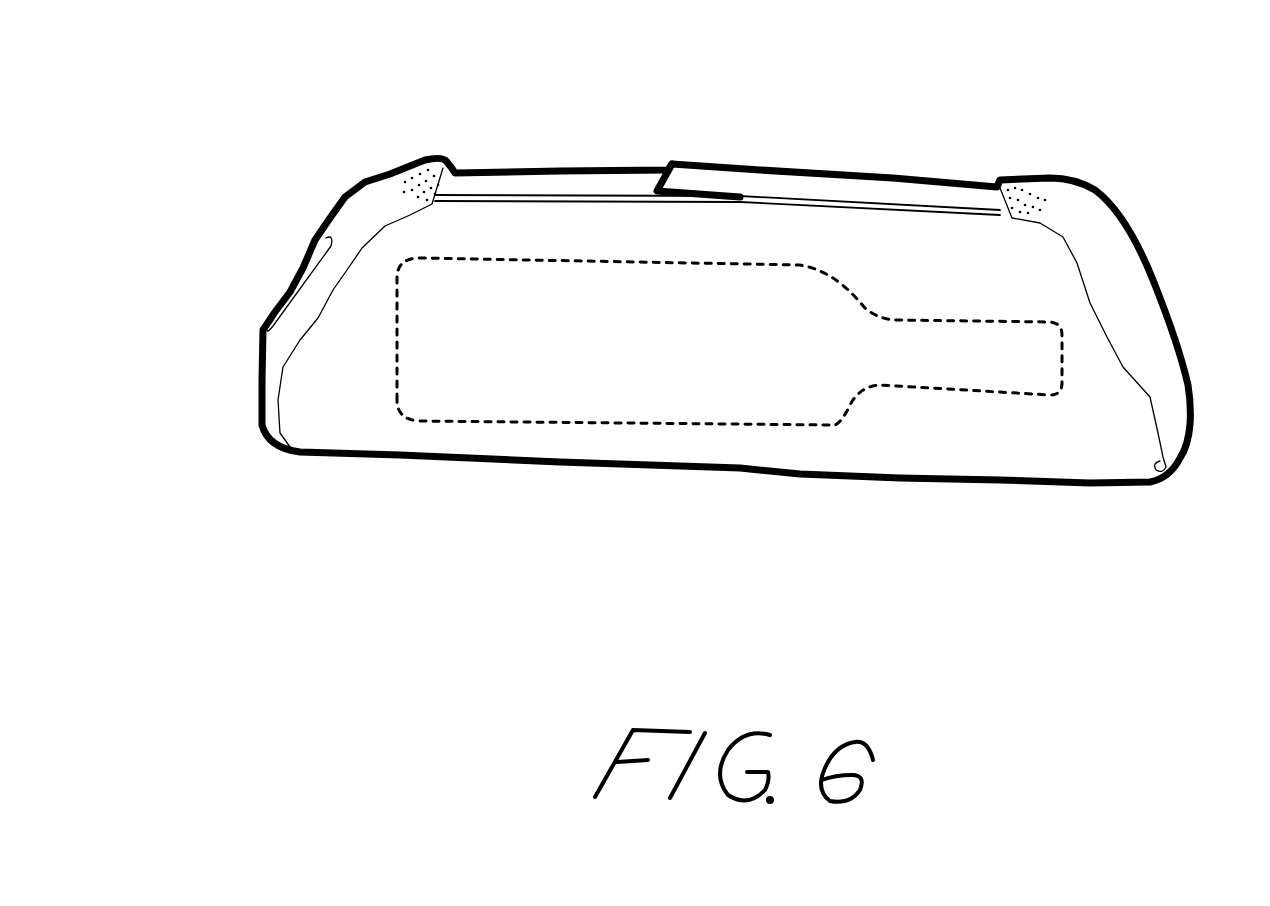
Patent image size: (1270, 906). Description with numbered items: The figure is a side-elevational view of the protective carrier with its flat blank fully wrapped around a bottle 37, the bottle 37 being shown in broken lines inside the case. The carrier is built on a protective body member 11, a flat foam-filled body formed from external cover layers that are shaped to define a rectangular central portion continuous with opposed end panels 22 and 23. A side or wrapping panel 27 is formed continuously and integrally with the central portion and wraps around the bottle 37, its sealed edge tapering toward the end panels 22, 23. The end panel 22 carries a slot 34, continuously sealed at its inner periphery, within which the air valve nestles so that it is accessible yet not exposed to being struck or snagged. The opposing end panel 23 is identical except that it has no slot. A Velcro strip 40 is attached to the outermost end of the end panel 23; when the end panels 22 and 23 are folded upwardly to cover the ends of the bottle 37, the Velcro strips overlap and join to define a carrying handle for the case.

The protective body member 11 is at (368, 455).
The end panel 22 is at (360, 212).
The end panel 23 is at (1117, 258).
The wrapping panel 27 is at (547, 245).
The slot 34 is at (296, 290).
The bottle 37 is at (668, 303).
The Velcro strip 40 is at (890, 188).